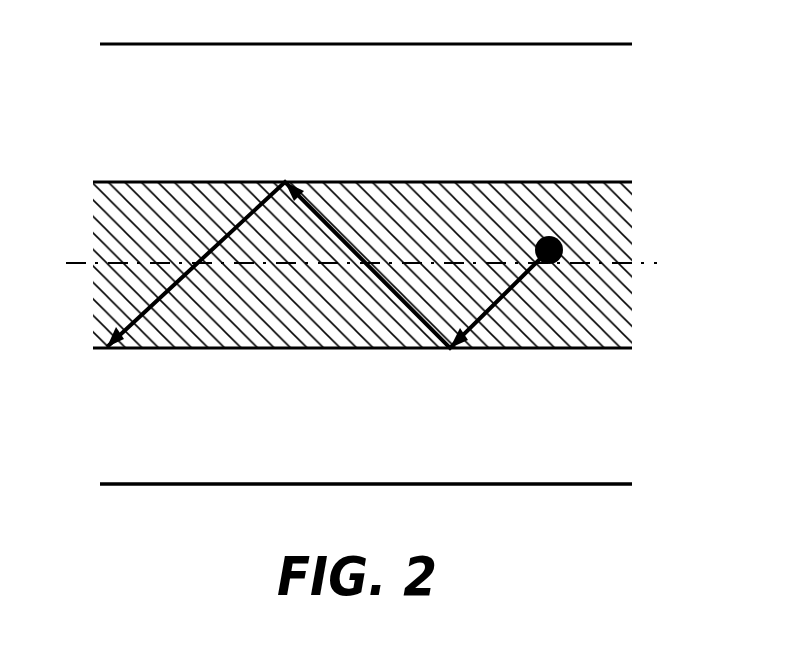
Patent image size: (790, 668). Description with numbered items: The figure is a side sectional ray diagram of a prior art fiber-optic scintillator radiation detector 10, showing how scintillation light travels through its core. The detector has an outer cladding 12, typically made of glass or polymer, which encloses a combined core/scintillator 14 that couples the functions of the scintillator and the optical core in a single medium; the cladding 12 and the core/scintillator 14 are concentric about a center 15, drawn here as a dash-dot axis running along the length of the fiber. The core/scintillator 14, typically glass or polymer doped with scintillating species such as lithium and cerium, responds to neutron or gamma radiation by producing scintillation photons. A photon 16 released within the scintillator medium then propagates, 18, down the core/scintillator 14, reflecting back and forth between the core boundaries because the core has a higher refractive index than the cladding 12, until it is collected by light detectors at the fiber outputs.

The fiber-optic scintillator radiation detector 10 is at (112, 21).
The cladding 12 is at (522, 44).
The core/scintillator 14 is at (117, 228).
The center 15 is at (643, 263).
The photon 16 is at (548, 236).
The propagation 18 is at (510, 268).